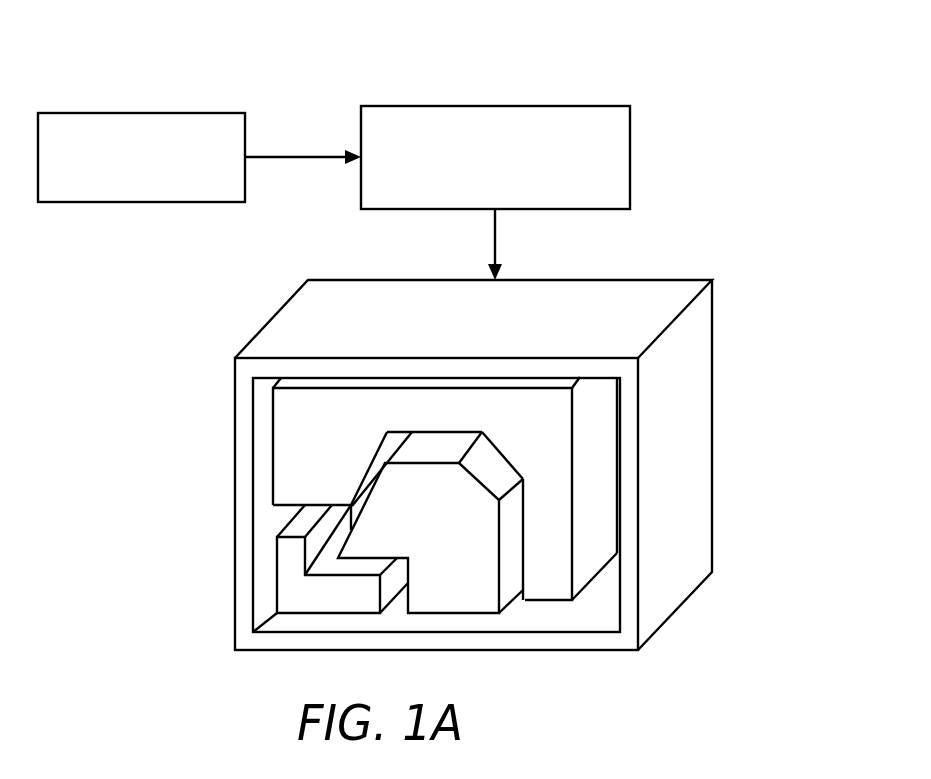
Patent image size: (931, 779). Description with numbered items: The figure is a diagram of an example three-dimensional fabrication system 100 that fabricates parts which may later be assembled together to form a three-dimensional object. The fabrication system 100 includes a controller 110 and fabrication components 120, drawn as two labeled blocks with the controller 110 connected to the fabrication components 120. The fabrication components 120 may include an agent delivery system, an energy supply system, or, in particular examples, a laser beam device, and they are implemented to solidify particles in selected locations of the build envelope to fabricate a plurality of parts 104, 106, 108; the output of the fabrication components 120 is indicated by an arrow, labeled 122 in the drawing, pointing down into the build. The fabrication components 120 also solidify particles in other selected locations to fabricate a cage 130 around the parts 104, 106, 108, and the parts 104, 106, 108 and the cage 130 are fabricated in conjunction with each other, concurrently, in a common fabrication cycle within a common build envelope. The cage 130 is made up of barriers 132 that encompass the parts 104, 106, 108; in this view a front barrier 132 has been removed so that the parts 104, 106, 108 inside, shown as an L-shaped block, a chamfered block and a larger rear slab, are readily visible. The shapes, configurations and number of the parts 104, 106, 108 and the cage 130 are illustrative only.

The 3D fabrication system 100 is at (415, 58).
The controller 110 is at (163, 184).
The fabrication components 120 is at (477, 199).
The fabrication output 122 is at (495, 236).
The cage 130 is at (235, 453).
The barrier 132 is at (675, 362).
The part 104 is at (277, 556).
The part 106 is at (497, 614).
The part 108 is at (572, 452).